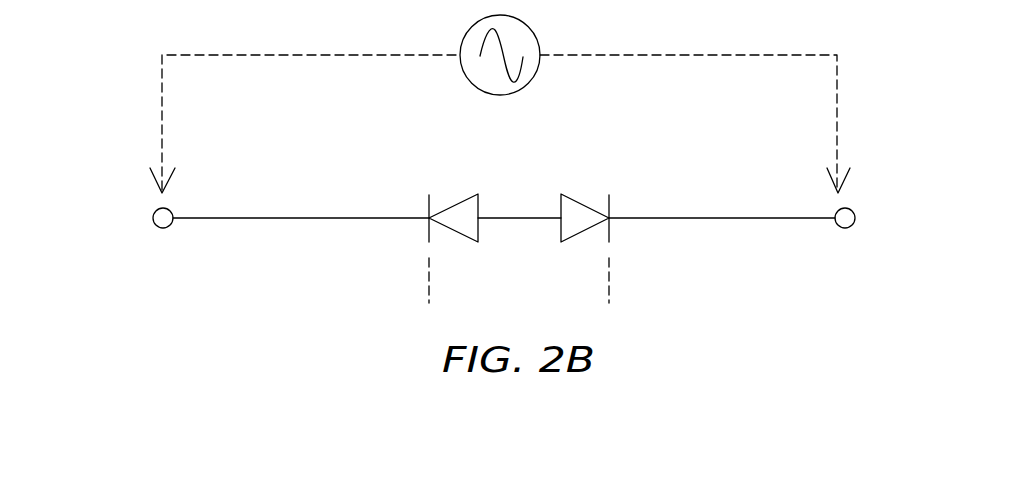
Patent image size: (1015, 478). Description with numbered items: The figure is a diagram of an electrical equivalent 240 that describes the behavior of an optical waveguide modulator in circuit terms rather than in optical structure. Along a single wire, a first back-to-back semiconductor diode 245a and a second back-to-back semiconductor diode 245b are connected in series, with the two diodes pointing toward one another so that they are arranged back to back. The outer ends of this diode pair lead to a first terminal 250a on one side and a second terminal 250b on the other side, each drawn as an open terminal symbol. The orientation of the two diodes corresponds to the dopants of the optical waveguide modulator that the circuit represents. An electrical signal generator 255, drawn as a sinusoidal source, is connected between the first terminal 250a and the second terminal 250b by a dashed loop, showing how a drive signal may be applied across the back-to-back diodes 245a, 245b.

The electrical equivalent 240 is at (925, 98).
The electrical signal generator 255 is at (535, 33).
The first terminal 250a is at (153, 213).
The second terminal 250b is at (855, 213).
The first back-to-back semiconductor diode 245a is at (458, 202).
The second back-to-back semiconductor diode 245b is at (578, 202).